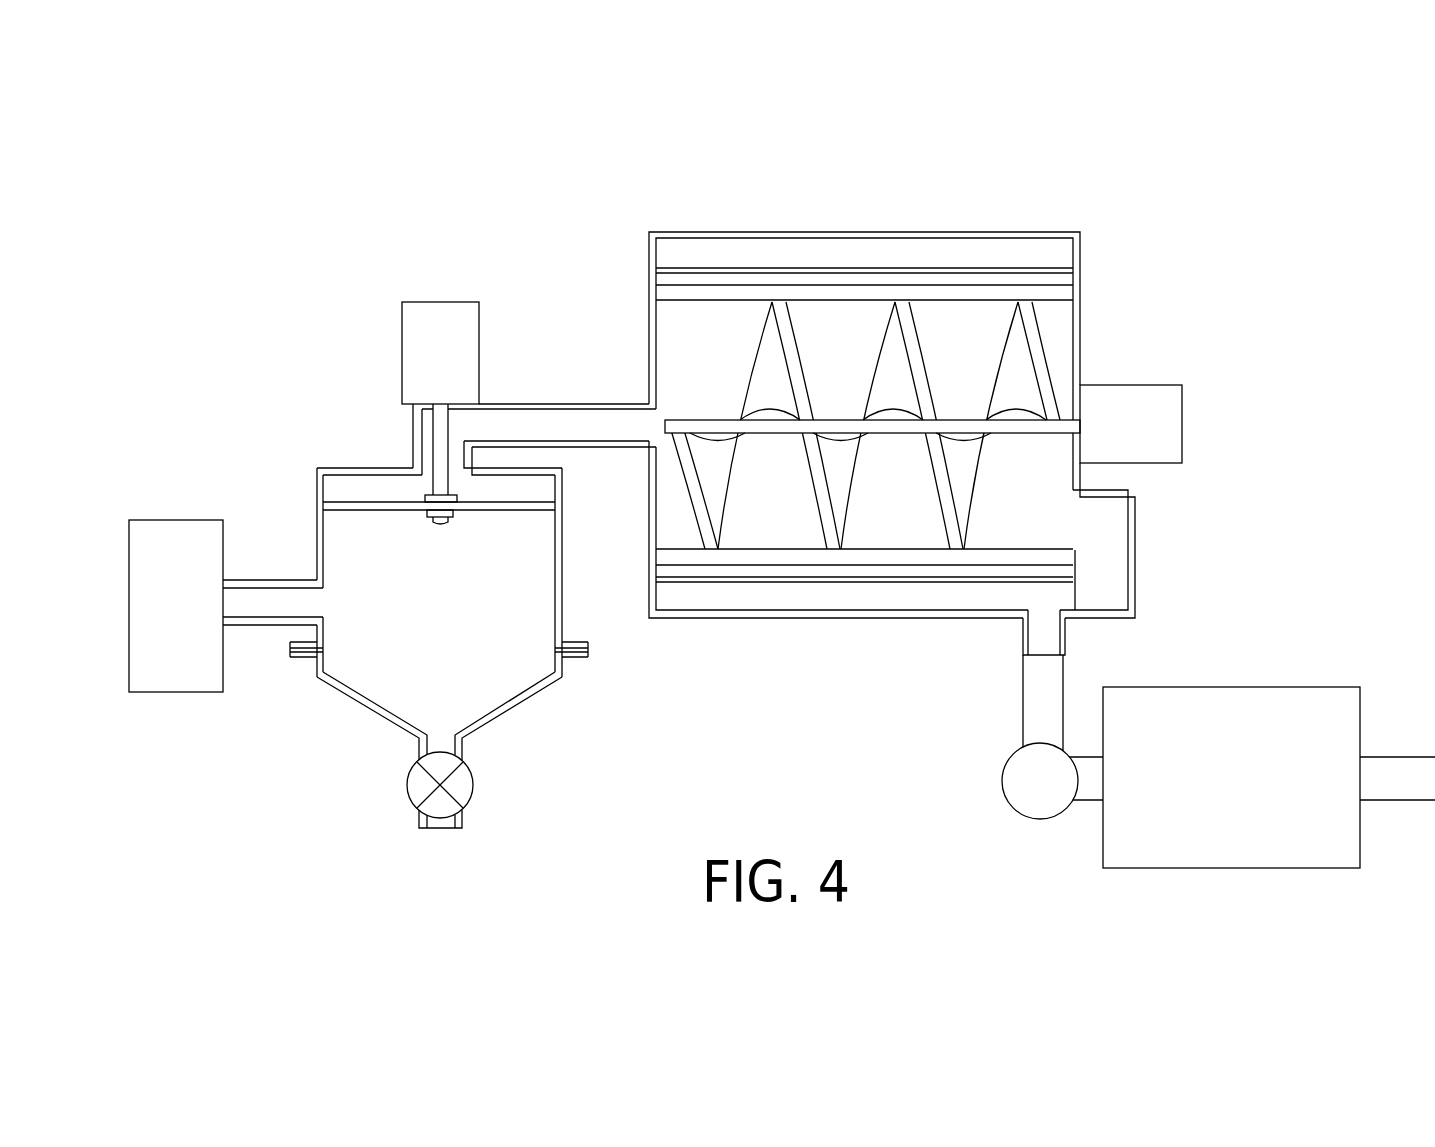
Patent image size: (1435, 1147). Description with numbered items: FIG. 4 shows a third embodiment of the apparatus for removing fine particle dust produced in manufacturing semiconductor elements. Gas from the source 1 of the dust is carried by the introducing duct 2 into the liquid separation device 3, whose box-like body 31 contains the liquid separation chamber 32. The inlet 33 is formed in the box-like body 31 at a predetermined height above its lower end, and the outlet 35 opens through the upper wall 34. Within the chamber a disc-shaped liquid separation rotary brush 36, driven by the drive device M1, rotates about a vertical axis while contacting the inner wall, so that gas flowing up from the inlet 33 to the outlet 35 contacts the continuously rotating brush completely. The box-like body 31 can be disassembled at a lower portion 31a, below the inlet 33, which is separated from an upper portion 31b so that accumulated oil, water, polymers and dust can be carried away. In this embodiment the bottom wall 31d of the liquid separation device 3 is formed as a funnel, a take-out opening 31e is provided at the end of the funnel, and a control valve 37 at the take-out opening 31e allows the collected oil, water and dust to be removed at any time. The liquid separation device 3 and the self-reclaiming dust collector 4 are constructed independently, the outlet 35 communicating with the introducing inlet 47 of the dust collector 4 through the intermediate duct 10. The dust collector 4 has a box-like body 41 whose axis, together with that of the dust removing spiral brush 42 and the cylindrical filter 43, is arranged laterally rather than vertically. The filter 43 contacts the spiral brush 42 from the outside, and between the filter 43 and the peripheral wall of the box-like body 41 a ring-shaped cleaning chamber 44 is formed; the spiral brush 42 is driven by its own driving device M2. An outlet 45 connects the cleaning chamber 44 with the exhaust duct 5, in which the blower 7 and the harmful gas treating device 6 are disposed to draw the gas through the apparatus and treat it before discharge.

The source of the dust 1 is at (170, 518).
The introducing duct 2 is at (265, 580).
The liquid separation device 3 is at (433, 609).
The self-reclaiming dust collector 4 is at (892, 427).
The exhaust duct 5 is at (1028, 700).
The harmful gas treating device 6 is at (1232, 687).
The blower 7 is at (1028, 808).
The intermediate duct 10 is at (533, 404).
The box-like body 31 is at (563, 688).
The lower portion 31a is at (337, 692).
The upper portion 31b is at (317, 490).
The bottom wall 31d is at (508, 713).
The take-out opening 31e is at (463, 820).
The liquid separation chamber 32 is at (545, 593).
The inlet 33 is at (318, 603).
The upper wall 34 is at (333, 468).
The outlet 35 is at (424, 463).
The liquid separation rotary brush 36 is at (545, 500).
The control valve 37 is at (407, 790).
The box-like body 41 is at (715, 232).
The dust removing spiral brush 42 is at (795, 322).
The cylindrical filter 43 is at (865, 268).
The cleaning chamber 44 is at (927, 252).
The outlet 45 is at (1040, 611).
The introducing inlet 47 is at (645, 428).
The drive device M1 is at (440, 302).
The driving device M2 is at (1182, 422).